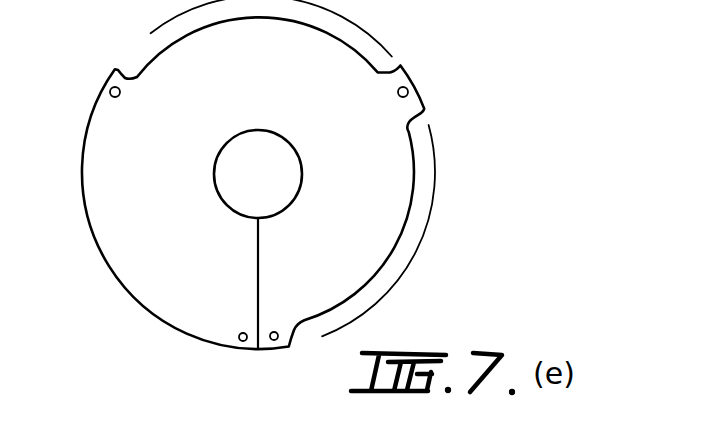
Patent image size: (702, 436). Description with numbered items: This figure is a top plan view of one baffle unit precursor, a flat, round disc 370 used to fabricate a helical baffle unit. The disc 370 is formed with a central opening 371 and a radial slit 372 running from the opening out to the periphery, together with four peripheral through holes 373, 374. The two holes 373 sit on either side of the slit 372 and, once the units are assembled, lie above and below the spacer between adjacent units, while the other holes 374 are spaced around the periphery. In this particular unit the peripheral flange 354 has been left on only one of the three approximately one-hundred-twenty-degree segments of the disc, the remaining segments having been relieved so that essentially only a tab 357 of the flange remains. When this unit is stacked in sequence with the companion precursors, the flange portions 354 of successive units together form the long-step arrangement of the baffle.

The circumferential flange 354 is at (148, 293).
The tab 357 is at (393, 82).
The flat round disc 370 is at (165, 186).
The central opening 371 is at (298, 188).
The radial slit 372 is at (256, 283).
The peripheral through holes 373 is at (262, 352).
The peripheral through hole 374 is at (110, 89).